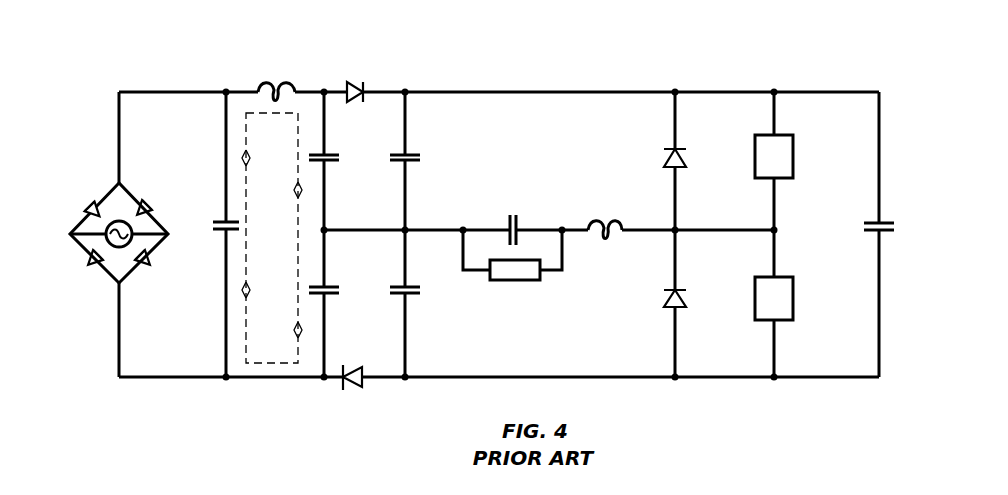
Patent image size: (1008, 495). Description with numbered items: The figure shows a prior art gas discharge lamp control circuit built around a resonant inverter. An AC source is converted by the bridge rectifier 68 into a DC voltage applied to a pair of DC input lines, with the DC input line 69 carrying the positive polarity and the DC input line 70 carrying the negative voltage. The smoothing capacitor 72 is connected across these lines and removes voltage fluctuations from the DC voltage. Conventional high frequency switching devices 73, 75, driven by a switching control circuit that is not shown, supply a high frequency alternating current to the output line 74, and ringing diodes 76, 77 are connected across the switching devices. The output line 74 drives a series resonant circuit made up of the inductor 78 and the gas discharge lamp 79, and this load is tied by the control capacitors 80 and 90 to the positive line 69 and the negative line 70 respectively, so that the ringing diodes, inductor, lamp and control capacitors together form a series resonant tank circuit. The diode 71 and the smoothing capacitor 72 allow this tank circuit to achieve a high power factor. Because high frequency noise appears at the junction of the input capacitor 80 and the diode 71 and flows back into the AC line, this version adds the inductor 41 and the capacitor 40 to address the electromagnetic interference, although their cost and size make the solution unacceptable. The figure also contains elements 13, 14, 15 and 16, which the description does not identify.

The capacitor 13 is at (522, 222).
The diode 14 is at (357, 387).
The capacitor 15 is at (415, 148).
The capacitor 16 is at (413, 295).
The capacitor 40 is at (217, 235).
The inductor 41 is at (275, 83).
The bridge rectifier 68 is at (101, 286).
The DC input line 69 is at (182, 90).
The DC input line 70 is at (247, 380).
The diode 71 is at (355, 77).
The smoothing capacitor 72 is at (883, 222).
The high frequency switching device 73 is at (797, 152).
The output line 74 is at (715, 233).
The high frequency switching device 75 is at (795, 293).
The ringing diode 76 is at (687, 155).
The ringing diode 77 is at (685, 300).
The inductor 78 is at (613, 218).
The gas discharge lamp 79 is at (513, 283).
The control capacitor 80 is at (332, 148).
The control capacitor 90 is at (332, 295).